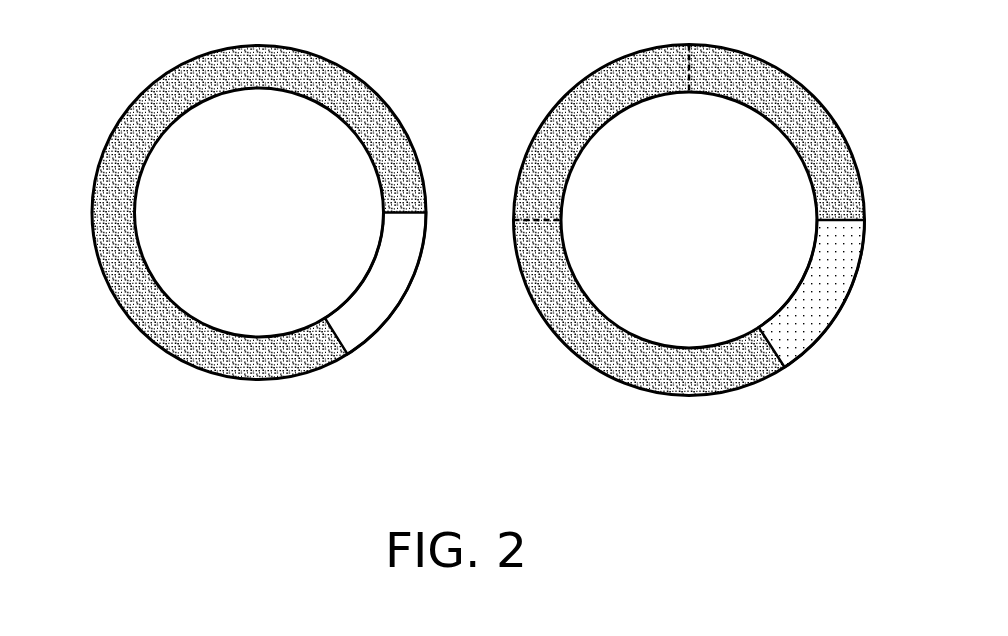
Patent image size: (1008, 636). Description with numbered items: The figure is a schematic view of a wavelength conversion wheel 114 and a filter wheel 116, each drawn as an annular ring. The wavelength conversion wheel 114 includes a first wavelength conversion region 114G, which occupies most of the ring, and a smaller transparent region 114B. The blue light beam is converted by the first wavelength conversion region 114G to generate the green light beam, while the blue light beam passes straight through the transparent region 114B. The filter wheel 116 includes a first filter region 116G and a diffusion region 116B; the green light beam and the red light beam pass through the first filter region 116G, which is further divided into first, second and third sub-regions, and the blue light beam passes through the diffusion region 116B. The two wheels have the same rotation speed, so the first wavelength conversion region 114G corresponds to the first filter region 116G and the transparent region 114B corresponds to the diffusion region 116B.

The wavelength conversion wheel 114 is at (253, 236).
The first wavelength conversion region 114G is at (155, 100).
The transparent region 114B is at (382, 302).
The filter wheel 116 is at (672, 240).
The first filter region 116G is at (659, 239).
The diffusion region 116B is at (818, 295).